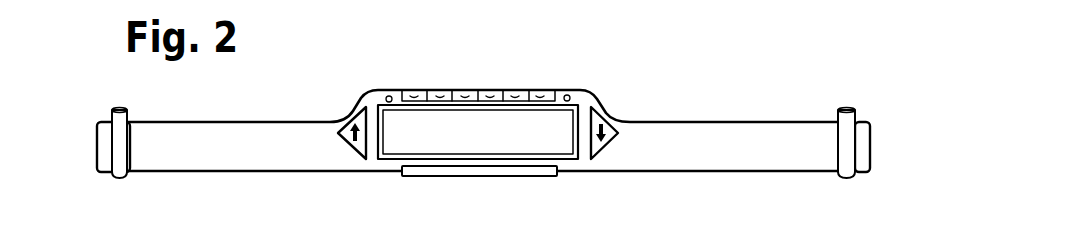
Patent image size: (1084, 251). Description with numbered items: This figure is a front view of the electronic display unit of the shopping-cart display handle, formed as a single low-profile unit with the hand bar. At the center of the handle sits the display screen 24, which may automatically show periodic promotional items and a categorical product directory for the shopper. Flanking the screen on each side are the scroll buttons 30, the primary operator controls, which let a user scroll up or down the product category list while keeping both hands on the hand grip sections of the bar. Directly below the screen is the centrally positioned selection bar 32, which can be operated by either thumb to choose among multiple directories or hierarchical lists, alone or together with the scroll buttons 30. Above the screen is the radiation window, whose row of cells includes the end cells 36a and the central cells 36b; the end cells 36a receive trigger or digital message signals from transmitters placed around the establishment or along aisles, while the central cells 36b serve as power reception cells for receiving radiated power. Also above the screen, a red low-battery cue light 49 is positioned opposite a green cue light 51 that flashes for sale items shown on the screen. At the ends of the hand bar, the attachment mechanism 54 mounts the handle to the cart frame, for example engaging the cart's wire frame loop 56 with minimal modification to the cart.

The display screen 24 is at (428, 150).
The scroll buttons 30 is at (334, 120).
The selection bar 32 is at (520, 172).
The end cells 36a is at (408, 89).
The central cells 36b is at (457, 97).
The low-battery cue light 49 is at (578, 98).
The cue light 51 is at (362, 94).
The attachment mechanism 54 is at (862, 140).
The wire frame loop 56 is at (110, 115).